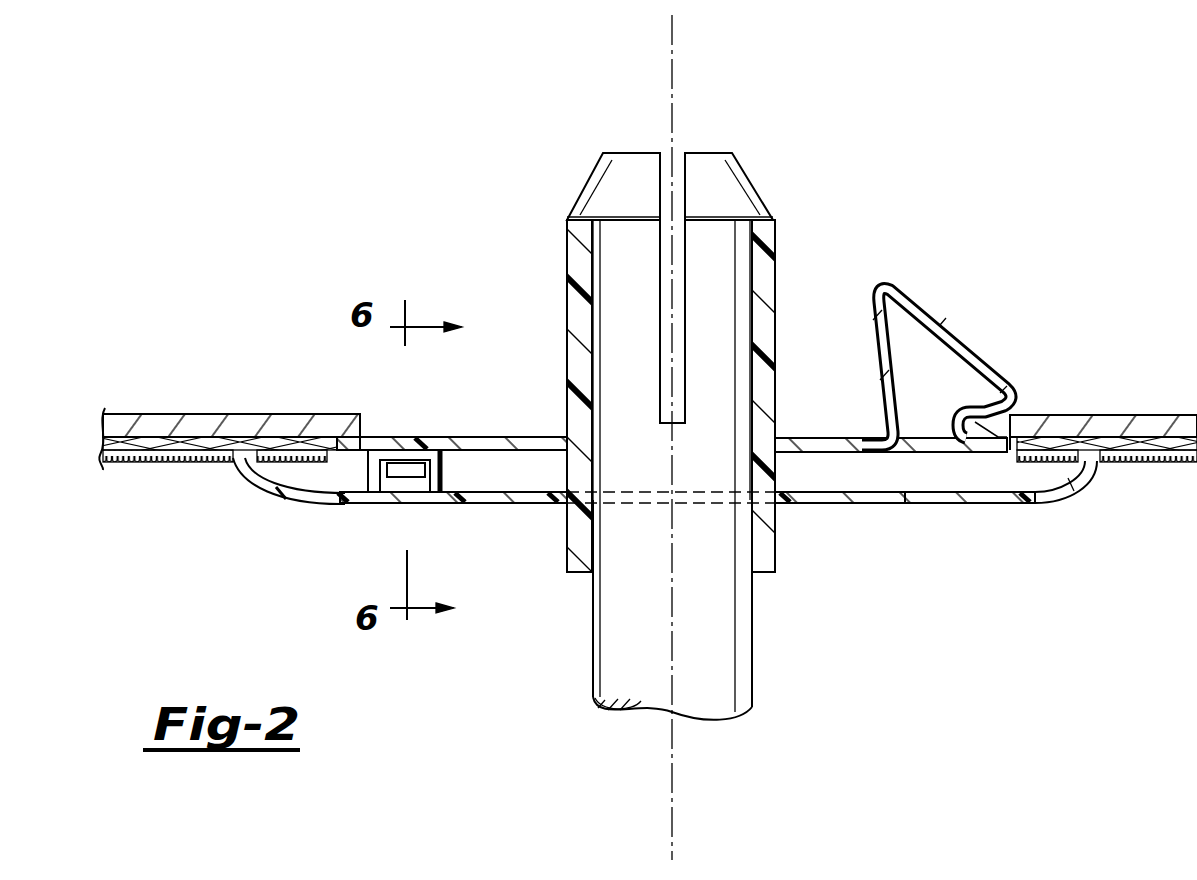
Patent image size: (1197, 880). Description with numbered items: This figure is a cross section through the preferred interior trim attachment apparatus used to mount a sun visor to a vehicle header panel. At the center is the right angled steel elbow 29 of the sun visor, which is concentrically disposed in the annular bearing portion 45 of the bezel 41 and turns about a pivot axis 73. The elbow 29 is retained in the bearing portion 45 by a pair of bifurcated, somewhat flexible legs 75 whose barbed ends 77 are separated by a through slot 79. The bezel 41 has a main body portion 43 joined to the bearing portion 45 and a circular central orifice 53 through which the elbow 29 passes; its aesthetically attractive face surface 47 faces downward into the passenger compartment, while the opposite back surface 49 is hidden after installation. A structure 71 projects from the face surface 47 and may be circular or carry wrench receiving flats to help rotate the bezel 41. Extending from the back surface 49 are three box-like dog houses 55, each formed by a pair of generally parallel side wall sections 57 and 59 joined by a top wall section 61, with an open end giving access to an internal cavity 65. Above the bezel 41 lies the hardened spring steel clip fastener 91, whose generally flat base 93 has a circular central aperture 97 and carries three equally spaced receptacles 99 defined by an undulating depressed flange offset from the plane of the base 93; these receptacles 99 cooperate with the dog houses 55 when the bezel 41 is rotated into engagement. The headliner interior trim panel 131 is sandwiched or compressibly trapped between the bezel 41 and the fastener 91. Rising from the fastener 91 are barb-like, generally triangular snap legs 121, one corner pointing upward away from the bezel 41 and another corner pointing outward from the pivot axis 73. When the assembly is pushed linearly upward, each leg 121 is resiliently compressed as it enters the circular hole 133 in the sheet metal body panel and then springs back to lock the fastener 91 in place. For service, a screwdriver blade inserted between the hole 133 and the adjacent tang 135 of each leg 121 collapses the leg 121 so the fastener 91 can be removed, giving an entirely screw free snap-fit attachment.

The elbow 29 is at (728, 648).
The bezel 41 is at (1062, 488).
The main body portion 43 is at (962, 502).
The annular bearing portion 45 is at (763, 278).
The face surface 47 is at (852, 497).
The back surface 49 is at (525, 487).
The central orifice 53 is at (596, 343).
The dog house 55 is at (392, 437).
The side wall section 57 is at (370, 487).
The side wall section 59 is at (443, 442).
The top wall section 61 is at (392, 447).
The internal cavity 65 is at (392, 488).
The structure 71 is at (576, 540).
The pivot axis 73 is at (674, 70).
The legs 75 is at (617, 287).
The barbed ends 77 is at (617, 160).
The through slot 79 is at (677, 232).
The clip fastener 91 is at (792, 443).
The base 93 is at (822, 446).
The central aperture 97 is at (567, 400).
The receptacle 99 is at (410, 478).
The snap leg 121 is at (945, 330).
The headliner interior trim panel 131 is at (1128, 432).
The hole 133 is at (1012, 432).
The tang 135 is at (952, 430).